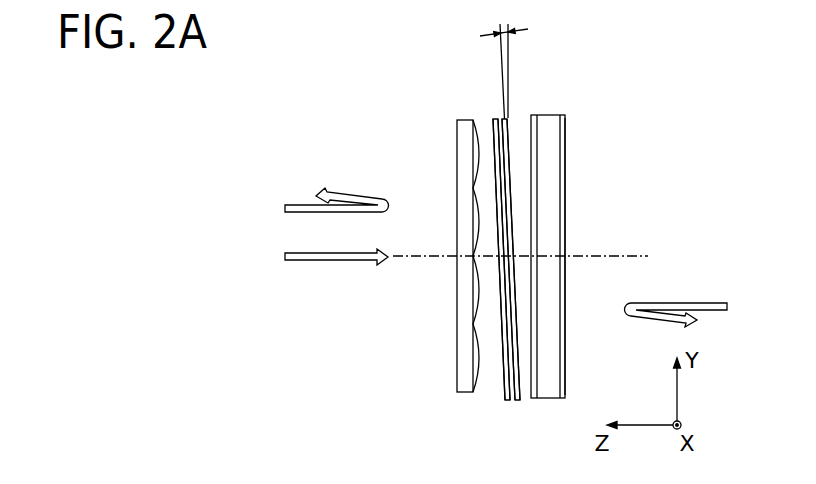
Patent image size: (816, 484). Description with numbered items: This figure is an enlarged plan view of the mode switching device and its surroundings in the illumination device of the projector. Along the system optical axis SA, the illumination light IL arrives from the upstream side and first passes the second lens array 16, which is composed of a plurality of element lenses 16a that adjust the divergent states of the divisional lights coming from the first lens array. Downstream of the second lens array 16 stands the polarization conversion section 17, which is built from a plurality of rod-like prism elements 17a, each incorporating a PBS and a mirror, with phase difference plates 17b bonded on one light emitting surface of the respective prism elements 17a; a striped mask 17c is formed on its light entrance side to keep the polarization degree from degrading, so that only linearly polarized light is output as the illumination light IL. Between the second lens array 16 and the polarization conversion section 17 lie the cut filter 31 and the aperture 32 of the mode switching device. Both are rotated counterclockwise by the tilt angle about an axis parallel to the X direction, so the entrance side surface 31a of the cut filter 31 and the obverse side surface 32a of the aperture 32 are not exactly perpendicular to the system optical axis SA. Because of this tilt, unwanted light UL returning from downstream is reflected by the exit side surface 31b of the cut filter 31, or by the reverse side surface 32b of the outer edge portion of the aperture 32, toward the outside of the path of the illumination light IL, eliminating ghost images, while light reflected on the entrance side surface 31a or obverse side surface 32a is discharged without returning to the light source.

The second lens array 16 is at (431, 219).
The element lens 16a is at (474, 158).
The polarization conversion section 17 is at (595, 222).
The prism element 17a is at (557, 152).
The phase difference plate 17b is at (564, 124).
The striped mask 17c is at (536, 360).
The cut filter 31 is at (521, 289).
The entrance side surface 31a is at (496, 191).
The exit side surface 31b is at (503, 206).
The aperture 32 is at (521, 289).
The obverse side surface 32a is at (506, 236).
The reverse side surface 32b is at (513, 243).
The unwanted light UL is at (300, 205).
The illumination light IL is at (325, 262).
The system optical axis SA is at (394, 262).